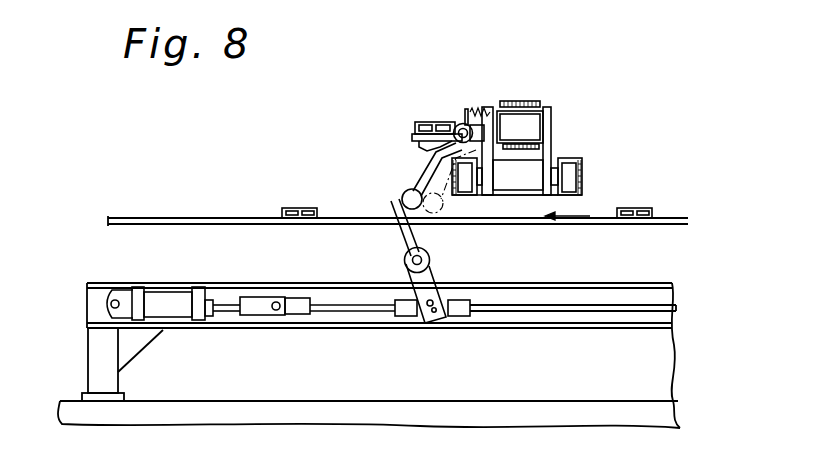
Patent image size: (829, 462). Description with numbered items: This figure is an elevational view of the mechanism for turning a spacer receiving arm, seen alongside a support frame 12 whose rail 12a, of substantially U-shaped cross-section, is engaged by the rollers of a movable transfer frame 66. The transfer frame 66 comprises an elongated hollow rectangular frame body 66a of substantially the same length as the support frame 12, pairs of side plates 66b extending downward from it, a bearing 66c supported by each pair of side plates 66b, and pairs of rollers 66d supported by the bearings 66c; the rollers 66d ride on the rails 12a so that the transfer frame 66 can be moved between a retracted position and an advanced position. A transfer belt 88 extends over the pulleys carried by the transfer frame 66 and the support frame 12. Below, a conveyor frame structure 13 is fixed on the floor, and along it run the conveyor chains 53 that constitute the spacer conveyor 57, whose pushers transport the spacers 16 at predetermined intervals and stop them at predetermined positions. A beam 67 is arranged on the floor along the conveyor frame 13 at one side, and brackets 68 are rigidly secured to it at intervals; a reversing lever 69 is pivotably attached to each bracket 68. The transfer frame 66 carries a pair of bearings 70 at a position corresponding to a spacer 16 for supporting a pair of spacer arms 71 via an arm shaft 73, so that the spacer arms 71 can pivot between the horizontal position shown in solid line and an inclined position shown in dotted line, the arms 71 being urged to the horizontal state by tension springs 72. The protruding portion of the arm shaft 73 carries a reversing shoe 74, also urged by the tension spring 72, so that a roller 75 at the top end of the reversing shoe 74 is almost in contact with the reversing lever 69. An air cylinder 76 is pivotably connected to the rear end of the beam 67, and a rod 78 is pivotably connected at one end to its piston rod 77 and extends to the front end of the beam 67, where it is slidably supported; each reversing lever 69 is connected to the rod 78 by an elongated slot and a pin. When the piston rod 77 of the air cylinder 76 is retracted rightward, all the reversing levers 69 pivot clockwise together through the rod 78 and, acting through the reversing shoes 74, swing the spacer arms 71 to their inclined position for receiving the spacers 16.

The support frame 12 is at (590, 165).
The rail 12a is at (452, 168).
The conveyor frame structure 13 is at (513, 325).
The spacer 16 is at (423, 122).
The conveyor chain 53 is at (207, 218).
The spacer conveyor 57 is at (258, 218).
The transfer frame 66 is at (541, 144).
The frame body 66a is at (522, 104).
The side plate 66b is at (495, 108).
The bearing 66c is at (518, 192).
The roller 66d is at (463, 195).
The beam 67 is at (398, 320).
The bracket 68 is at (393, 284).
The reversing lever 69 is at (402, 240).
The bearing 70 is at (458, 126).
The spacer arm 71 is at (412, 136).
The tension spring 72 is at (469, 108).
The arm shaft 73 is at (465, 124).
The reversing shoe 74 is at (410, 182).
The roller 75 is at (402, 200).
The air cylinder 76 is at (168, 303).
The piston rod 77 is at (227, 313).
The rod 78 is at (573, 306).
The transfer belt 88 is at (530, 104).